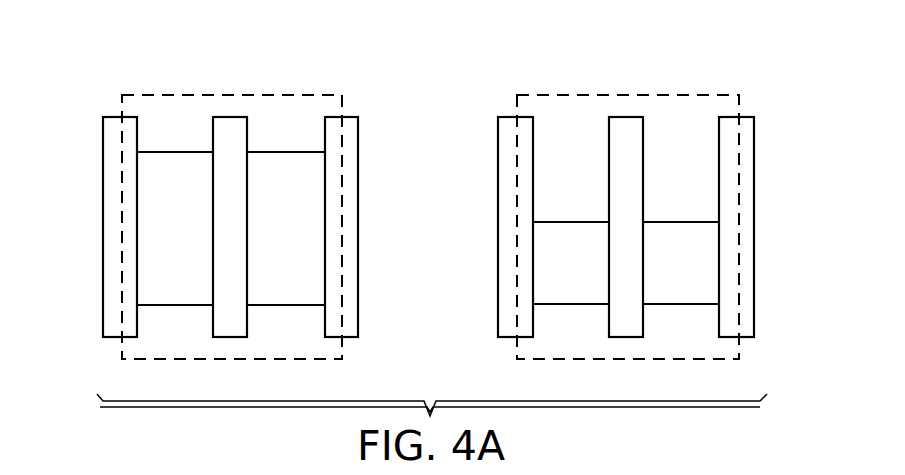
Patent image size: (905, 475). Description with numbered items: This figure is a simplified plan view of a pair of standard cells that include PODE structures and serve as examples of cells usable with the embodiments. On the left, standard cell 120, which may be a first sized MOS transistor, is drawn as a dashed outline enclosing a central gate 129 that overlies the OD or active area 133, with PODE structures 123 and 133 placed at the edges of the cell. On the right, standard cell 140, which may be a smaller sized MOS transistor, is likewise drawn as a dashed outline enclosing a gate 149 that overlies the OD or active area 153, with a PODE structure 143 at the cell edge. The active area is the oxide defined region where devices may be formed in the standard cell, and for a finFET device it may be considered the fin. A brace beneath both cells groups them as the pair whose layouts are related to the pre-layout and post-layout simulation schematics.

The standard cell 120 is at (193, 179).
The PODE structure 123 is at (102, 228).
The gate 129 is at (230, 117).
The active area 133 is at (290, 160).
The standard cell 140 is at (663, 179).
The PODE structure 143 is at (757, 205).
The gate 149 is at (625, 117).
The active area 153 is at (682, 220).